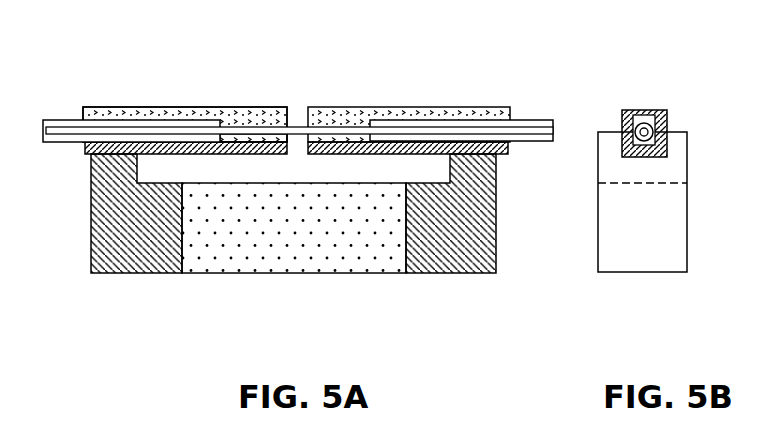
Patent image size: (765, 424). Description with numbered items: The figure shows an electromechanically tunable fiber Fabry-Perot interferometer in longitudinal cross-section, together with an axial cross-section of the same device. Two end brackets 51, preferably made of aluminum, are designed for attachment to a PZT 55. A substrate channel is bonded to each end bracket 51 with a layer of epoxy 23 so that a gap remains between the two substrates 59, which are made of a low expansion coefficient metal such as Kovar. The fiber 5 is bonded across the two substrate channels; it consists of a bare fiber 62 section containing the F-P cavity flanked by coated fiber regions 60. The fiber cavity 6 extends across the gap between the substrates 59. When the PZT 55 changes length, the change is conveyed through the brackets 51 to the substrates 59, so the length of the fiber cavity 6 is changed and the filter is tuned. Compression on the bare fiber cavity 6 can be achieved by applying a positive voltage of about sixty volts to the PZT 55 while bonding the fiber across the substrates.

In FIG. 5A, the fiber 5 is at (55, 128).
In FIG. 5A, the fiber cavity 6 is at (300, 128).
In FIG. 5A, the epoxy 23 is at (270, 118).
In FIG. 5A, the end bracket 51 is at (100, 200).
In FIG. 5A, the PZT 55 is at (307, 242).
In FIG. 5B, the PZT 55 is at (635, 235).
In FIG. 5A, the substrate 59 is at (92, 156).
In FIG. 5A, the coated fiber region 60 is at (122, 125).
In FIG. 5A, the bare fiber 62 is at (252, 128).